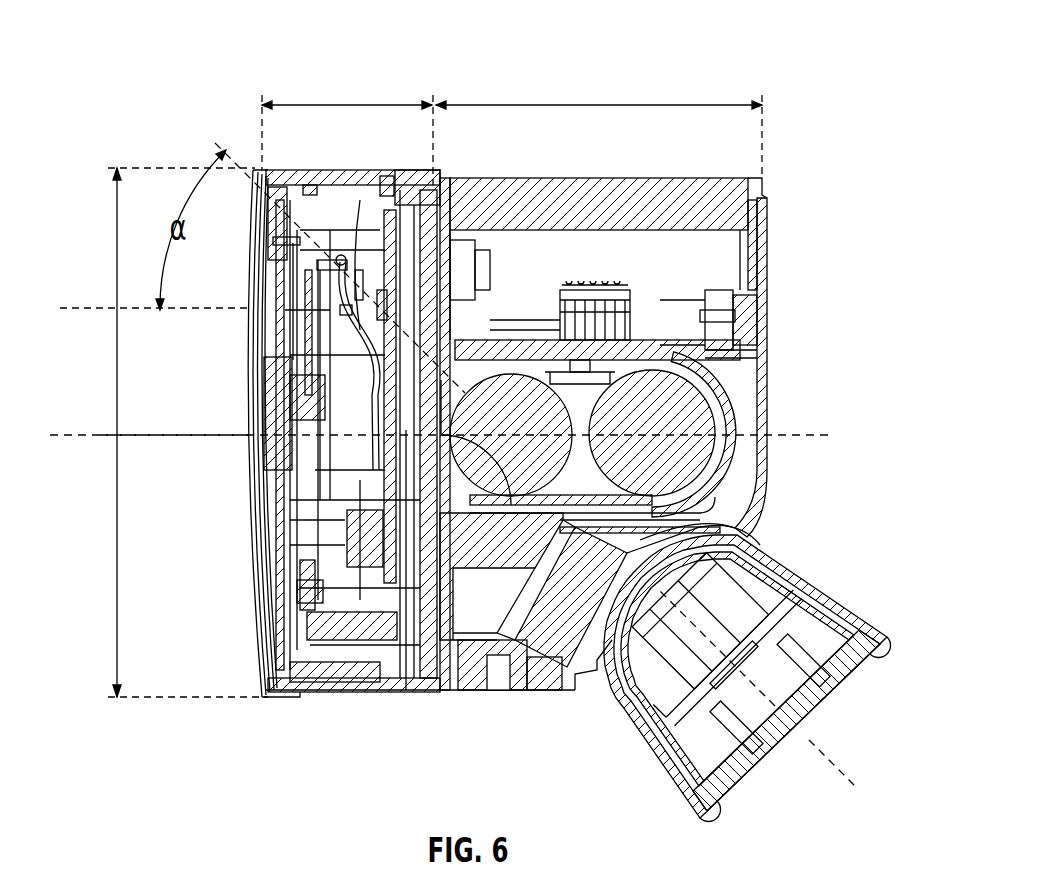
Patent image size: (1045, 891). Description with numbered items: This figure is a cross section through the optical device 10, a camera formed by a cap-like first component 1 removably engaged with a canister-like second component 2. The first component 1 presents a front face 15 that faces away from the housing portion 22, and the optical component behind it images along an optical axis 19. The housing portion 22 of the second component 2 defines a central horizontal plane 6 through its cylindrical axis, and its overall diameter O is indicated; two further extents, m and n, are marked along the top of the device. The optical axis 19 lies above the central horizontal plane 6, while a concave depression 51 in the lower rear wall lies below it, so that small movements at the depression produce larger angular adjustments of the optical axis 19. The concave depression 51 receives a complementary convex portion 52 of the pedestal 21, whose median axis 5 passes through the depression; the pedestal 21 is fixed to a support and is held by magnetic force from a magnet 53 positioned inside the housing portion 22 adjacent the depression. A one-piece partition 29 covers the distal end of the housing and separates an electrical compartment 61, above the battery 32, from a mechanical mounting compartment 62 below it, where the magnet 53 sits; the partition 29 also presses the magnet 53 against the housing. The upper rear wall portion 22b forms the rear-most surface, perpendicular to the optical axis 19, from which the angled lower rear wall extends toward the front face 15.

The optical device 10 is at (177, 101).
The first component 1 is at (333, 178).
The second component 2 is at (782, 198).
The housing portion 22 is at (712, 182).
The upper rear wall portion 22b is at (768, 262).
The partition 29 is at (473, 347).
The electrical compartment 61 is at (612, 242).
The battery 32 is at (690, 400).
The concave depression 51 is at (745, 533).
The convex portion 52 is at (777, 548).
The pedestal 21 is at (860, 632).
The median axis 5 is at (843, 775).
The magnet 53 is at (553, 643).
The mechanical mounting compartment 62 is at (467, 623).
The front face 15 is at (255, 598).
The central horizontal plane 6 is at (98, 440).
The optical axis 19 is at (95, 306).
The diameter O is at (103, 392).
The lens unit length m is at (353, 94).
The body length n is at (600, 94).